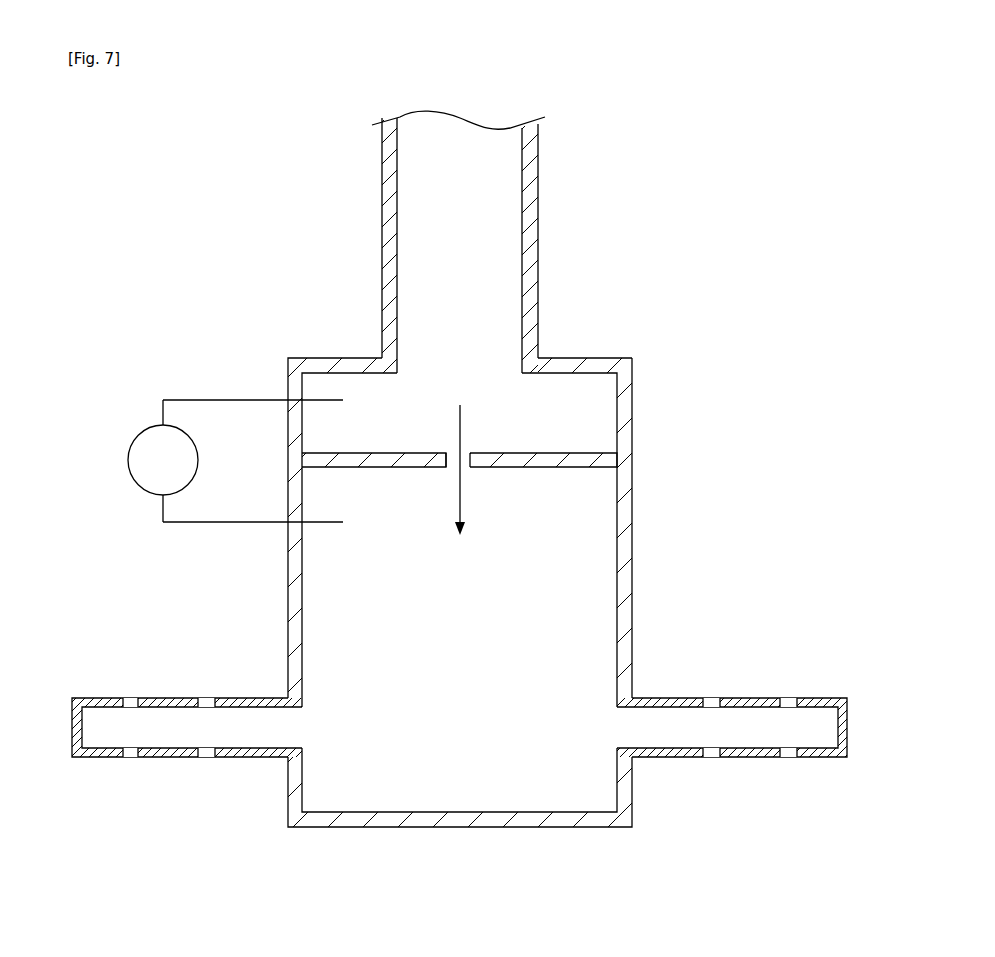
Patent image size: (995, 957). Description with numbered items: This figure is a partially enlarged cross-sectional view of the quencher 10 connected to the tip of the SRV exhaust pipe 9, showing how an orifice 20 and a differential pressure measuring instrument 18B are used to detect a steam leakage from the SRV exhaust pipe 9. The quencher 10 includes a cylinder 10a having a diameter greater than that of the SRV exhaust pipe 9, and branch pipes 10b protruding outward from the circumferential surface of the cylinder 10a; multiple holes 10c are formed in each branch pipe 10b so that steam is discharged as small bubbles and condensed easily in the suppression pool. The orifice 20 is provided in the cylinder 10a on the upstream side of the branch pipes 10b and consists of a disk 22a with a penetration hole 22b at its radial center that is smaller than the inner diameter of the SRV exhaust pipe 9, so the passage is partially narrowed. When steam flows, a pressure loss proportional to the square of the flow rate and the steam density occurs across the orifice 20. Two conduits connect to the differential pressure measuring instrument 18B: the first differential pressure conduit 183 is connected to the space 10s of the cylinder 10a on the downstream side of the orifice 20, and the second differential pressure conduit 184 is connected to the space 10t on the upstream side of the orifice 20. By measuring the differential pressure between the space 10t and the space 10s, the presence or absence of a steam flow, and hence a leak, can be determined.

The SRV exhaust pipe 9 is at (528, 217).
The quencher 10 is at (511, 592).
The cylinder 10a is at (634, 595).
The branch pipe 10b is at (459, 729).
The holes 10c is at (130, 698).
The space on the upstream side of the orifice 10t is at (521, 431).
The space on the downstream side of the orifice 10s is at (436, 663).
The orifice 20 is at (518, 461).
The disk 22a is at (558, 467).
The penetration hole 22b is at (469, 467).
The differential pressure measuring instrument 18B is at (223, 462).
The first differential pressure conduit 183 is at (235, 522).
The second differential pressure conduit 184 is at (218, 398).